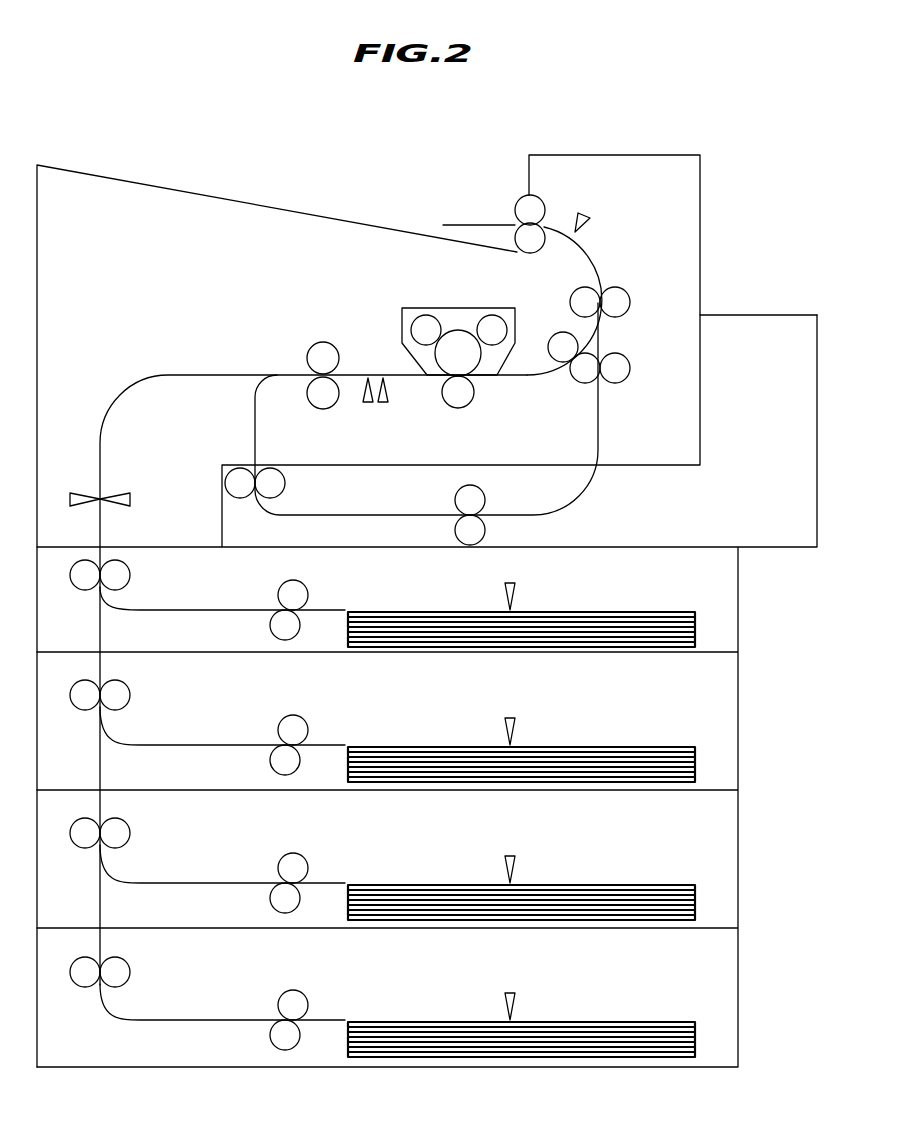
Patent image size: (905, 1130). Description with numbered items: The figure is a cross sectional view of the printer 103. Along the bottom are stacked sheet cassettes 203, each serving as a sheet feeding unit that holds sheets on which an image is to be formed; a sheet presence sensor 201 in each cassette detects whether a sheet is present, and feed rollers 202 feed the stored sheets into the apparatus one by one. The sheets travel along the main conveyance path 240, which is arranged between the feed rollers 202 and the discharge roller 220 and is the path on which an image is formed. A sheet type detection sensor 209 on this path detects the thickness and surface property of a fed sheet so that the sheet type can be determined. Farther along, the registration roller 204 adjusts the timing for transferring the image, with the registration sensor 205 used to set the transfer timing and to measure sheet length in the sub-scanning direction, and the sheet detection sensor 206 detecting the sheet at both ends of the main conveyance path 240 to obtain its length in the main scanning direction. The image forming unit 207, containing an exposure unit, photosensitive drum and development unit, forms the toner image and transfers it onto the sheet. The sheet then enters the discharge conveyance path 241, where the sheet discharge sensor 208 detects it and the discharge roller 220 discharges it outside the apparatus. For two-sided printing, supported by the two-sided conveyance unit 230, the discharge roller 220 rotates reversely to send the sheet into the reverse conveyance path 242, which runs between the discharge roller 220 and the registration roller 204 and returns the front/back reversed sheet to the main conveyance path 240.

The printer 103 is at (140, 183).
The sheet presence sensor 201 is at (516, 590).
The feed roller 202 is at (306, 584).
The sheet cassette 203 is at (697, 628).
The registration roller 204 is at (324, 342).
The registration sensor 205 is at (365, 405).
The sheet detection sensor 206 is at (385, 405).
The image forming unit 207 is at (458, 308).
The sheet discharge sensor 208 is at (588, 213).
The sheet type detection sensor 209 is at (85, 492).
The discharge roller 220 is at (618, 288).
The two-sided conveyance unit 230 is at (760, 315).
The main conveyance path 240 is at (300, 375).
The discharge conveyance path 241 is at (583, 253).
The reverse conveyance path 242 is at (350, 515).